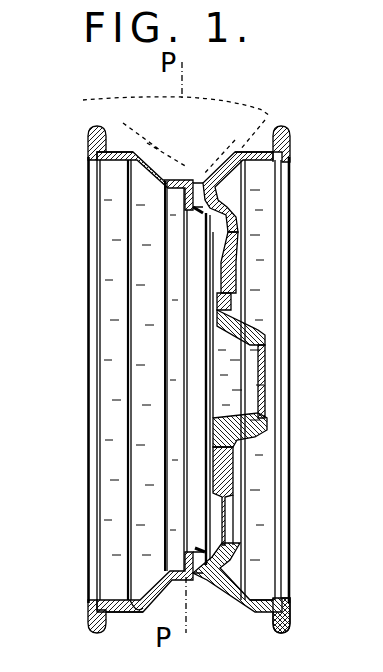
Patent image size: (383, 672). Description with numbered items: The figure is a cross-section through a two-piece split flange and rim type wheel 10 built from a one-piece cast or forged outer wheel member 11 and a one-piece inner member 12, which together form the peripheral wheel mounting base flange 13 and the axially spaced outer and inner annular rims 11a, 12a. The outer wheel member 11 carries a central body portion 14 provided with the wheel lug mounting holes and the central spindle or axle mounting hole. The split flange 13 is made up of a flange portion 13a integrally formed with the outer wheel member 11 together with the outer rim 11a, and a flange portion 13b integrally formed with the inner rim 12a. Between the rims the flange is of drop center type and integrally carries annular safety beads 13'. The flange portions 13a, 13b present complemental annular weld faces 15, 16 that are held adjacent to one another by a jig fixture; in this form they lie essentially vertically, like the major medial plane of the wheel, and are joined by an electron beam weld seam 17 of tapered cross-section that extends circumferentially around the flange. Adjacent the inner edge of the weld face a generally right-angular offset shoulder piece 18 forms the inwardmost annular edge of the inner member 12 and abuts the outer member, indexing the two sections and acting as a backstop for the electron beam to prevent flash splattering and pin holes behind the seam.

The wheel 10 is at (284, 98).
The outer wheel member 11 is at (240, 228).
The outer annular rim 11a is at (288, 128).
The inner member 12 is at (157, 188).
The inner annular rim 12a is at (88, 128).
The peripheral wheel mounting base flange 13 is at (176, 90).
The flange portion 13a is at (231, 140).
The flange portion 13b is at (157, 136).
The annular safety beads 13' is at (185, 370).
The central body portion 14 is at (233, 483).
The annular weld face 15 is at (258, 184).
The annular weld face 16 is at (187, 197).
The electron beam weld seam 17 is at (199, 187).
The offset shoulder piece 18 is at (172, 254).